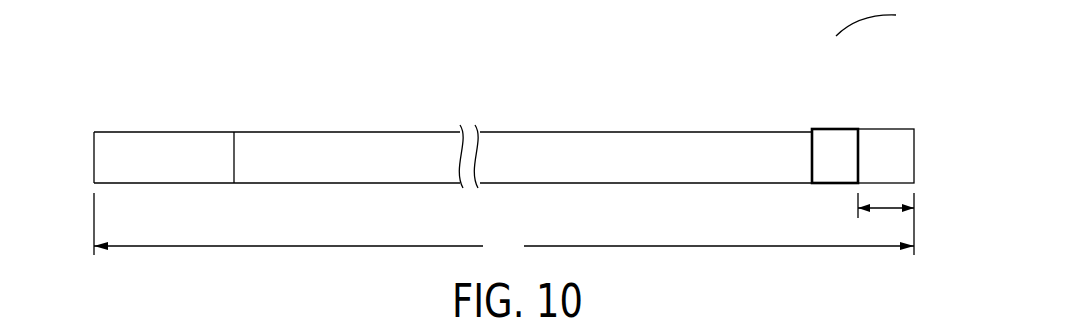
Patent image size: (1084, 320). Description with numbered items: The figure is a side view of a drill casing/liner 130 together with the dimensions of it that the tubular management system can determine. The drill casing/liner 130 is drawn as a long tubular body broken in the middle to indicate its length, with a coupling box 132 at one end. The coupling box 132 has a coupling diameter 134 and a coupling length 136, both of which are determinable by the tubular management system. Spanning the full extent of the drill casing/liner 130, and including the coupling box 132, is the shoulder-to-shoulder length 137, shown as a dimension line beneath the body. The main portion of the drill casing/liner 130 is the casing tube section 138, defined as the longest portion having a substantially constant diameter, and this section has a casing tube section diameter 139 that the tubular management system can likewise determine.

The drill casing/liner 130 is at (833, 39).
The coupling box 132 is at (885, 117).
The coupling diameter 134 is at (812, 157).
The coupling length 136 is at (887, 213).
The shoulder-to-shoulder length 137 is at (504, 227).
The casing tube section 138 is at (440, 150).
The casing tube section diameter 139 is at (234, 157).